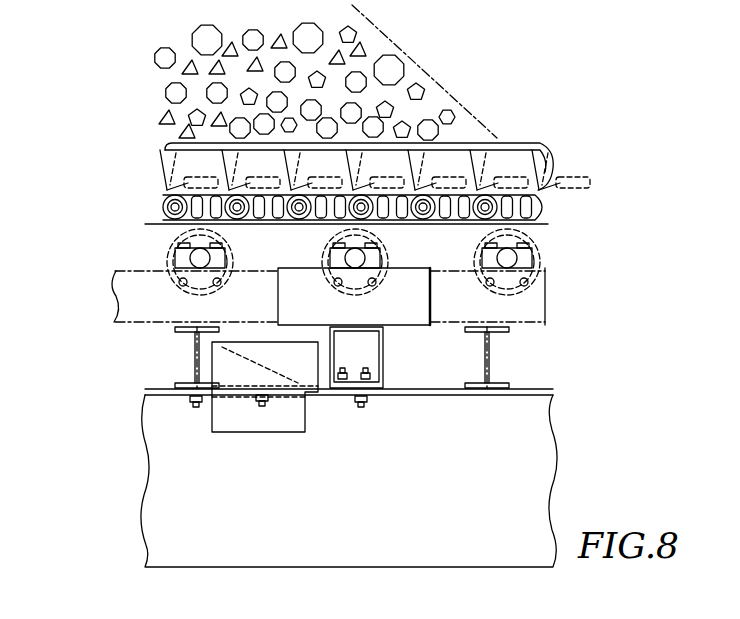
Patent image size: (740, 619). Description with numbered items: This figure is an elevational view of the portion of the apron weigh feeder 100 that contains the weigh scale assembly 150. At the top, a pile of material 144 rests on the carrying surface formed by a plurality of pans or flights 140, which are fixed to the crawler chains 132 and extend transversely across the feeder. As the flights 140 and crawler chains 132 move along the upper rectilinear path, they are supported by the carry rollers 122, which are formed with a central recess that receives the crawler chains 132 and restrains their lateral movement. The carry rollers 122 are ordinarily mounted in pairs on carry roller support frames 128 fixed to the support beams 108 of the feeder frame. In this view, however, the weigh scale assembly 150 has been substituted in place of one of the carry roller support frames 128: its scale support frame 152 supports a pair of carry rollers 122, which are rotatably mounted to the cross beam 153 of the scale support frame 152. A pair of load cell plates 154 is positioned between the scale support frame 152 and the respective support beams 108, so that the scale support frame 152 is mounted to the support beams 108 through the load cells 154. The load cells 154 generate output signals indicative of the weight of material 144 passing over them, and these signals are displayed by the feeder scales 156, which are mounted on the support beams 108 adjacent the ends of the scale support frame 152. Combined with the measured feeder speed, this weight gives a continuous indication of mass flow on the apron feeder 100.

The apron weigh feeder 100 is at (132, 51).
The material 144 is at (403, 53).
The flights 140 is at (520, 143).
The crawler chains 132 is at (555, 197).
The carry rollers 122 is at (578, 238).
The cross beam 153 is at (303, 280).
The scale support frame 152 is at (385, 336).
The carry roller support frames 128 is at (494, 344).
The load cell plates 154 is at (382, 398).
The feeder scales 156 is at (258, 432).
The weigh scale assembly 150 is at (323, 428).
The support beams 108 is at (537, 460).